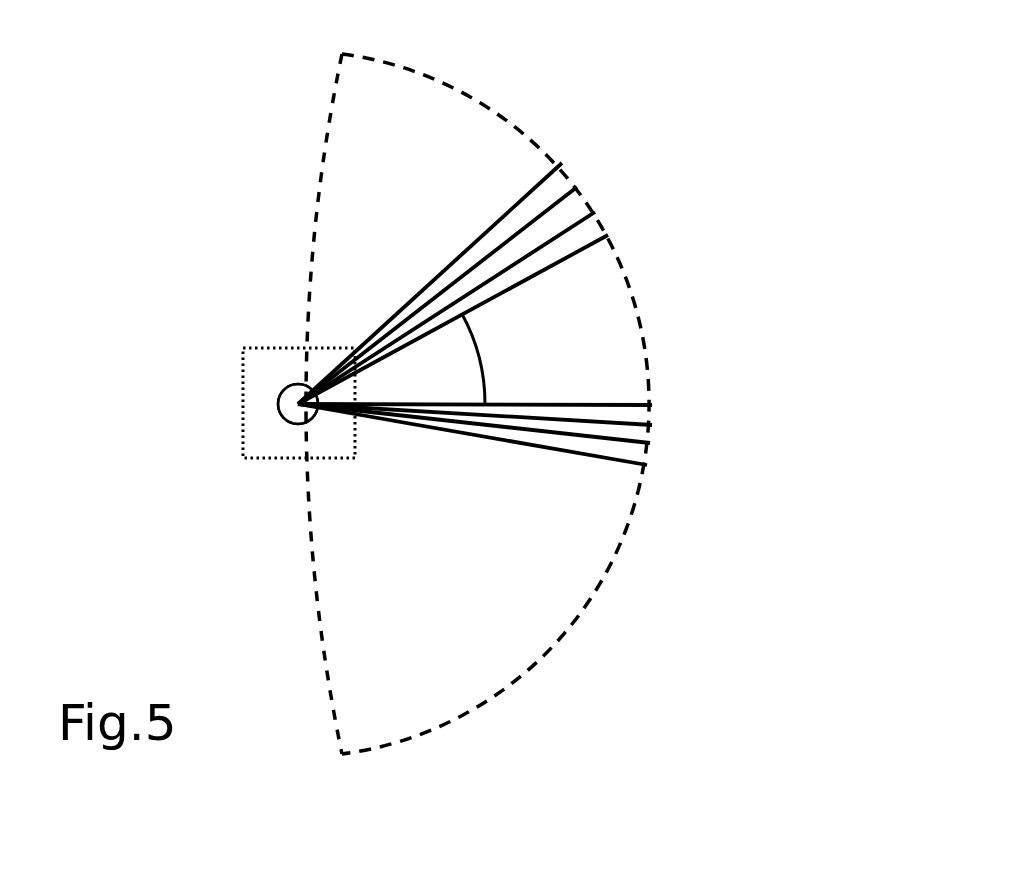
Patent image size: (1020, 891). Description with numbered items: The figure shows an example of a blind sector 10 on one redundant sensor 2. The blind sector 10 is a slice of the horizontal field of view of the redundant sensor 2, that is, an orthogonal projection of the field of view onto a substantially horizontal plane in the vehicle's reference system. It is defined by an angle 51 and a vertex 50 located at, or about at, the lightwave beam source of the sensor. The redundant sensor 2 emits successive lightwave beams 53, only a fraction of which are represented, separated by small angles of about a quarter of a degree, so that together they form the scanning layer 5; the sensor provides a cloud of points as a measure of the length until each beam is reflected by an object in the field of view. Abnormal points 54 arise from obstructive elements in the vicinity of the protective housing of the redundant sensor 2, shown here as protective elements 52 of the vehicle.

The redundant sensor 2 is at (285, 420).
The scanning layer 5 is at (510, 122).
The blind sector 10 is at (630, 358).
The vertex 50 is at (278, 405).
The angle 51 is at (485, 325).
The protective elements 52 is at (282, 348).
The lightwave beams 53 is at (500, 222).
The abnormal points 54 is at (353, 390).